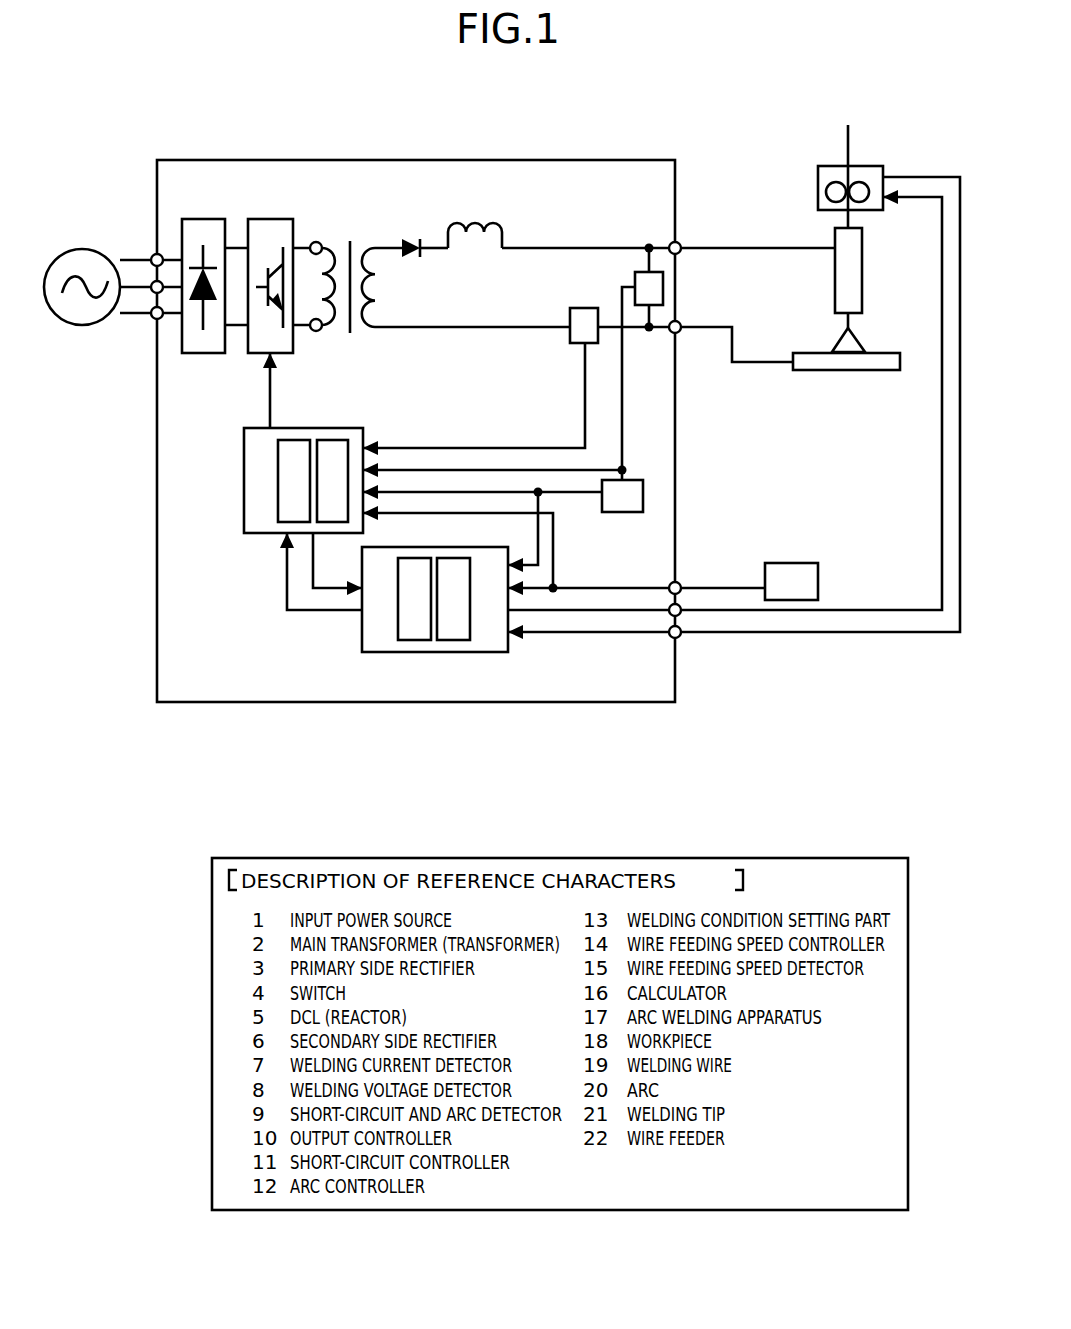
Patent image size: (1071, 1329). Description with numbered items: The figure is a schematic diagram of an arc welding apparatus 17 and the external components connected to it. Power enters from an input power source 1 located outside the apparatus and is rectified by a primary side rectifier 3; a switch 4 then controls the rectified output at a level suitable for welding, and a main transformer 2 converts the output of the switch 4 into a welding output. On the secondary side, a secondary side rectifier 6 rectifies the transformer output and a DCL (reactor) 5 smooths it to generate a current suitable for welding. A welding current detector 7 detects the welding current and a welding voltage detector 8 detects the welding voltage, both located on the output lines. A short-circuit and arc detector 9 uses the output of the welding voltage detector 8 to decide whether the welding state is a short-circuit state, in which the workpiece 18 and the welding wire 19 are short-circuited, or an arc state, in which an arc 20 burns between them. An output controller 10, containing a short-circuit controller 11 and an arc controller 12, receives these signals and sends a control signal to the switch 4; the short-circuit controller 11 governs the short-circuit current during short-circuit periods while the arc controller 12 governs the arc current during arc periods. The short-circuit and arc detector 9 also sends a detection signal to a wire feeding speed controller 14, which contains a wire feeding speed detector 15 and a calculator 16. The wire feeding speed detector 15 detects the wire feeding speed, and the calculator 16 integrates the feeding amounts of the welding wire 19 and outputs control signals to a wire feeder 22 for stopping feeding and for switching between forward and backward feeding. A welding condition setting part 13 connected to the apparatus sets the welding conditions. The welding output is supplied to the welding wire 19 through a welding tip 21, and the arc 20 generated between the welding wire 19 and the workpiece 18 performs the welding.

The input power source 1 is at (82, 325).
The main transformer (transformer) 2 is at (350, 242).
The primary side rectifier 3 is at (202, 355).
The switch 4 is at (258, 355).
The DCL (reactor) 5 is at (473, 223).
The secondary side rectifier 6 is at (407, 240).
The welding current detector 7 is at (570, 318).
The welding voltage detector 8 is at (634, 279).
The short-circuit and arc detector 9 is at (624, 512).
The output controller 10 is at (274, 443).
The short-circuit controller 11 is at (295, 448).
The arc controller 12 is at (332, 448).
The welding condition setting part 13 is at (793, 575).
The wire feeding speed controller 14 is at (404, 623).
The wire feeding speed detector 15 is at (416, 640).
The calculator 16 is at (453, 640).
The arc welding apparatus 17 is at (210, 702).
The workpiece 18 is at (849, 370).
The welding wire 19 is at (848, 142).
The arc 20 is at (855, 345).
The welding tip 21 is at (862, 275).
The wire feeder 22 is at (818, 192).